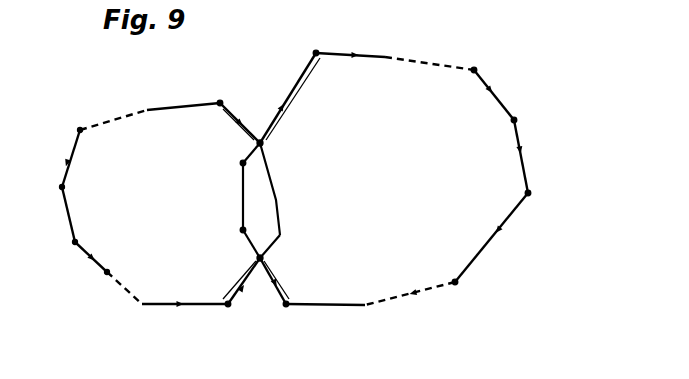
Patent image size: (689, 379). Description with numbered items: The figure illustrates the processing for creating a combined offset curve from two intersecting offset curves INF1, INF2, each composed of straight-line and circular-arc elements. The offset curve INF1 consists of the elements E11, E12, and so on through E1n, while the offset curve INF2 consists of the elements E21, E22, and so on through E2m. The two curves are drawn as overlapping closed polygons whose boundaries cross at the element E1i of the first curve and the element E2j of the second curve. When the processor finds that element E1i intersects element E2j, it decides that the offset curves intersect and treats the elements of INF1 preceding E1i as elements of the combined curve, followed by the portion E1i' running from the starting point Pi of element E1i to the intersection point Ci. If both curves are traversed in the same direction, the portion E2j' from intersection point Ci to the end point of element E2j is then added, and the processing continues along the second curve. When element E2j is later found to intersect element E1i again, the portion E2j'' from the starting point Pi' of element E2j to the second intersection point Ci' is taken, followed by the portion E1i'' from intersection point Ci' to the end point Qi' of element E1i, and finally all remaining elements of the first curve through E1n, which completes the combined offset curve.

The element E12 is at (59, 159).
The element E11 is at (58, 216).
The element E1n is at (94, 273).
The offset curve INF1 is at (122, 303).
The starting point Pi is at (213, 116).
The element E1i is at (240, 119).
The portion E1i' is at (216, 139).
The element E2j is at (288, 98).
The portion E2j' is at (299, 99).
The element E2m is at (498, 95).
The element E21 is at (530, 156).
The offset curve INF2 is at (531, 178).
The element E22 is at (493, 239).
The starting point Pi' is at (364, 309).
The end point Qi' is at (230, 318).
The portion E1i'' is at (233, 279).
The portion E2j'' is at (286, 281).
The intersection point Ci is at (260, 189).
The intersection point Ci' is at (260, 237).